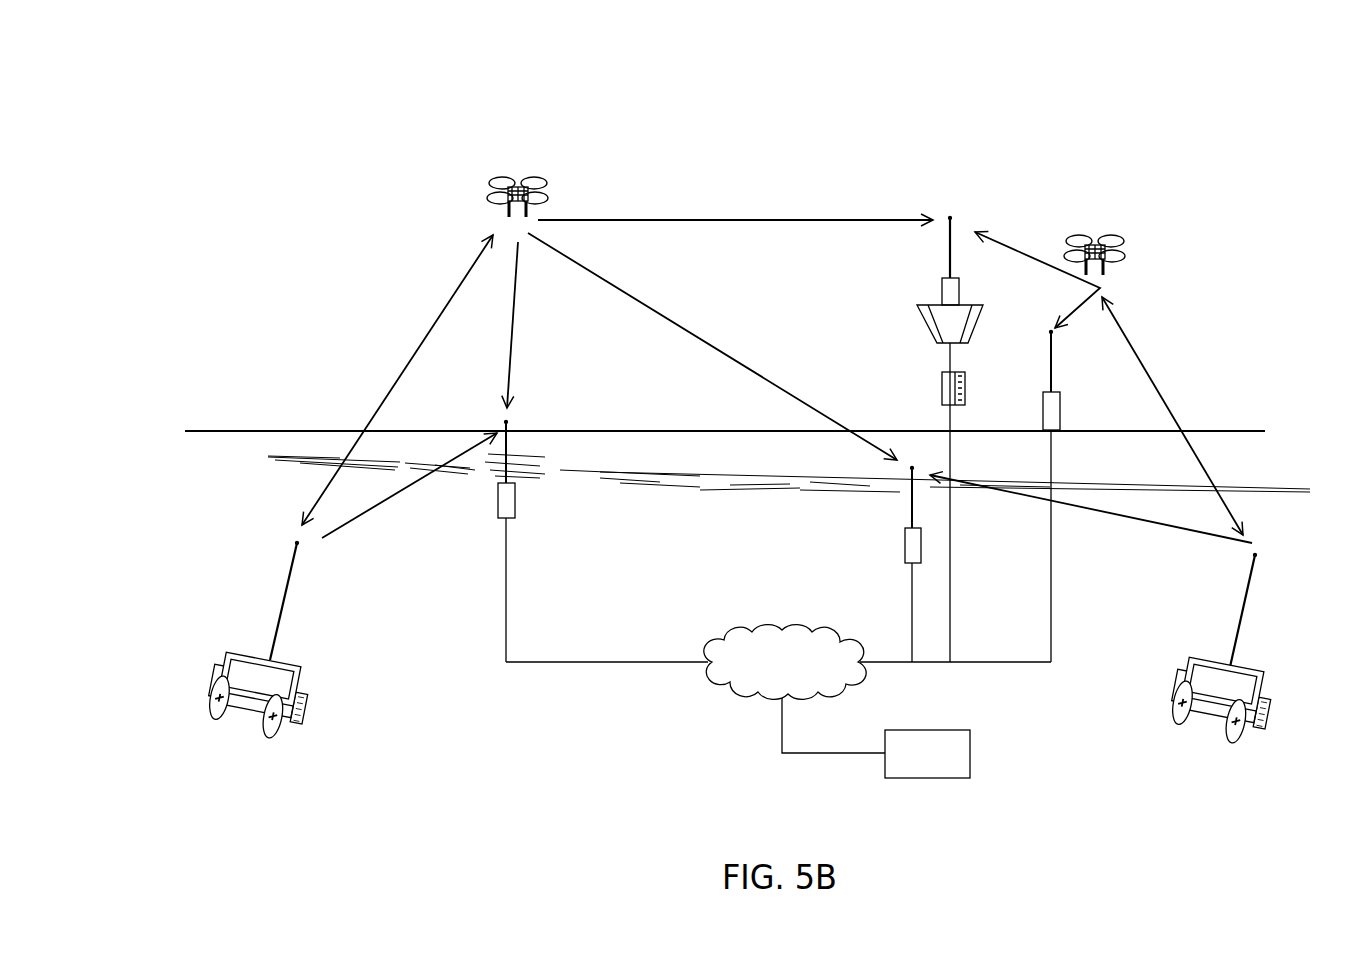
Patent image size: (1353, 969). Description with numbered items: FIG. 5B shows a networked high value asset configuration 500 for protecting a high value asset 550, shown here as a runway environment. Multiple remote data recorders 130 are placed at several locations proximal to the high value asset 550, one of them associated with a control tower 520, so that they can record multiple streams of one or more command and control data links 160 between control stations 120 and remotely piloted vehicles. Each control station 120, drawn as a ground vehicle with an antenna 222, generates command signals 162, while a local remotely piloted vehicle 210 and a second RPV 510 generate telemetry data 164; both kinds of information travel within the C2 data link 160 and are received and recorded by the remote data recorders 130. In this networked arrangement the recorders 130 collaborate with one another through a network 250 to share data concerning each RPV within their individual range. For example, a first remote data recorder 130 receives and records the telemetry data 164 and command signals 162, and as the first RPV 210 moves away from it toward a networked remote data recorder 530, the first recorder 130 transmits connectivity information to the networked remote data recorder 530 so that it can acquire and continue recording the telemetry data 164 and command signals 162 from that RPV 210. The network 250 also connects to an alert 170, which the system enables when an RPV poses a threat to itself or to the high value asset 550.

The high value asset configuration 500 is at (203, 147).
The local remotely piloted vehicle 210 is at (540, 178).
The second RPV 510 is at (1120, 242).
The telemetry data 164 is at (742, 219).
The command and control (C2) data link 160 is at (418, 343).
The command signals 162 is at (388, 500).
The remote data recorder 130 is at (942, 294).
The control tower 520 is at (937, 343).
The networked remote data recorder 530 is at (900, 557).
The high value asset 550 is at (635, 520).
The network 250 is at (765, 695).
The alert 170 is at (965, 730).
The antenna 222 is at (278, 607).
The control station 120 is at (208, 688).